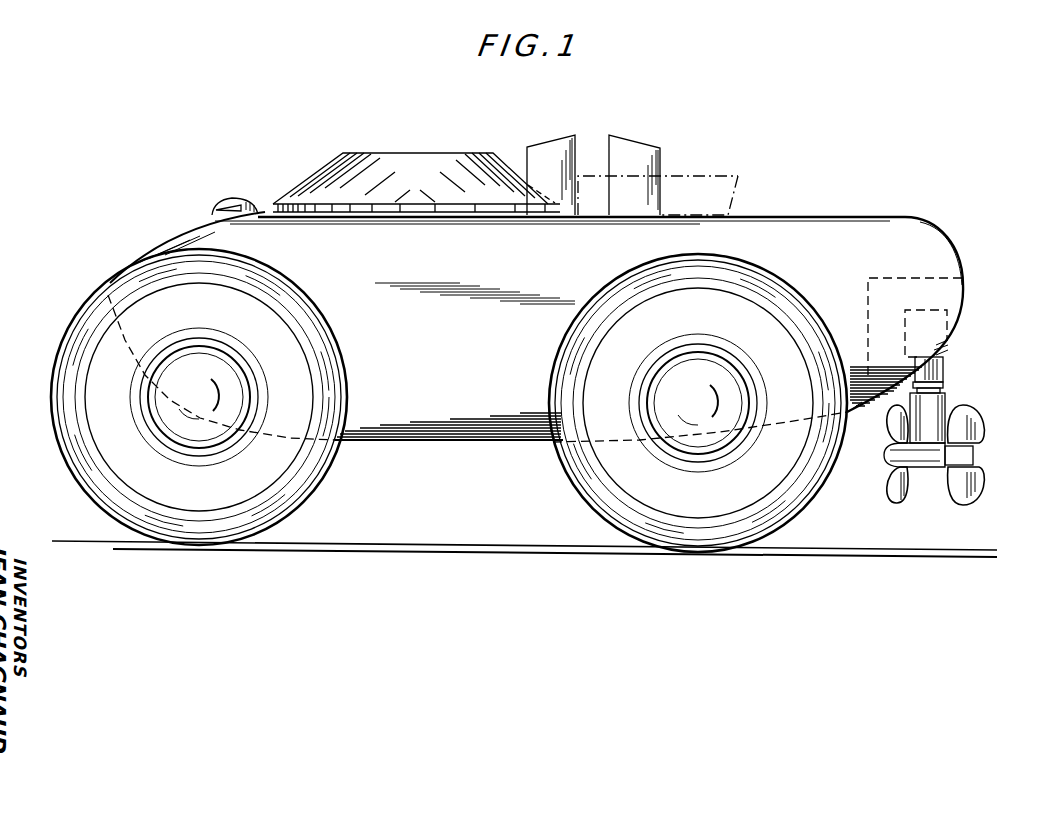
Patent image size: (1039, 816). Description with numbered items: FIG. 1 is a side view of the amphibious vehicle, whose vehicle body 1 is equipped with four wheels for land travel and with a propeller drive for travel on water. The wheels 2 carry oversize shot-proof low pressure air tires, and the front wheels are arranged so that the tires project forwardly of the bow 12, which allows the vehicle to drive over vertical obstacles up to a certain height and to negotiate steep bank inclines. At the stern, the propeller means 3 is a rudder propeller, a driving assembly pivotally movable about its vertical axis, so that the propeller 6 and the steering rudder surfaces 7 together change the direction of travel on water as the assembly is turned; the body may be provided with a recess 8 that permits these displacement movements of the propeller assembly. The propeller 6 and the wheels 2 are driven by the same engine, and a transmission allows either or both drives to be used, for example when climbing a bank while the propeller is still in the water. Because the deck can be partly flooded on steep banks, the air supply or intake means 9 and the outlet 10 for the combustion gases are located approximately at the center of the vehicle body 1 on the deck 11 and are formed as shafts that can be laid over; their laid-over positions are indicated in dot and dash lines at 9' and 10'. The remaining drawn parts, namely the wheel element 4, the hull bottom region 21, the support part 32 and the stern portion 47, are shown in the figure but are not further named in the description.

The vehicle body 1 is at (795, 236).
The wheels 2 is at (187, 440).
The propeller means 3 is at (928, 403).
The wheel 4 is at (105, 353).
The propeller 6 is at (897, 487).
The steering rudder surfaces 7 is at (958, 490).
The recess 8 is at (860, 421).
The air supply or intake means 9 is at (548, 162).
The laid-over position of air intake shaft 9' is at (658, 176).
The outlet 10 is at (634, 160).
The laid-over position of outlet shaft 10' is at (699, 176).
The deck 11 is at (775, 216).
The bow 12 is at (118, 278).
The hull bottom 21 is at (448, 444).
The propeller support bracket 32 is at (940, 384).
The stern 47 is at (950, 245).